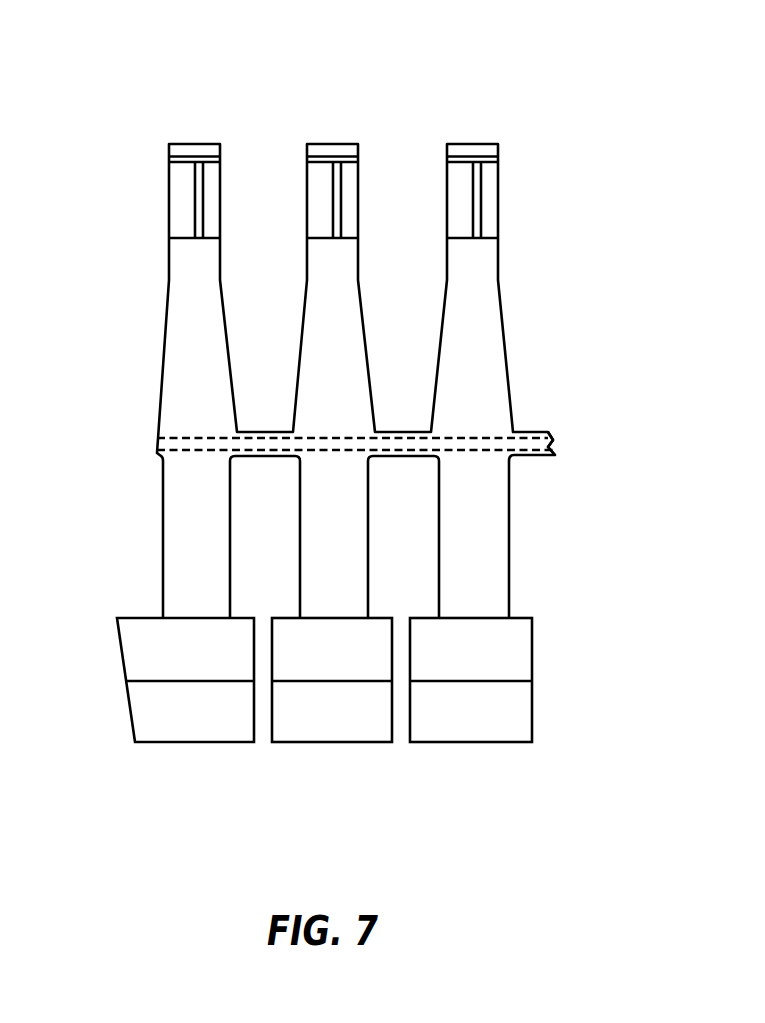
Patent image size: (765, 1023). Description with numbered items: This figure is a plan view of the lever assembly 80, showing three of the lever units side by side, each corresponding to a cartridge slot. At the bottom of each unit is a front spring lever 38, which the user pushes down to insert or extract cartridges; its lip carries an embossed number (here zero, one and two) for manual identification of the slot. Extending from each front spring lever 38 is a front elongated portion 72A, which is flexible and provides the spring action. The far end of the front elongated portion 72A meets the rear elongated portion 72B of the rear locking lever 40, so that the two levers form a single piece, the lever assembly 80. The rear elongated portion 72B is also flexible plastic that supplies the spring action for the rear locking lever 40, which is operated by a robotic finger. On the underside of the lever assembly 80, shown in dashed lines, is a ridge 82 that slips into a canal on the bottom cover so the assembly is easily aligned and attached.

The rear locking lever 40 is at (361, 118).
The rear elongated portion 72B is at (487, 328).
The front elongated portion 72A is at (487, 575).
The lever assembly 80 is at (110, 478).
The ridge 82 is at (483, 440).
The front spring lever 38 is at (168, 768).